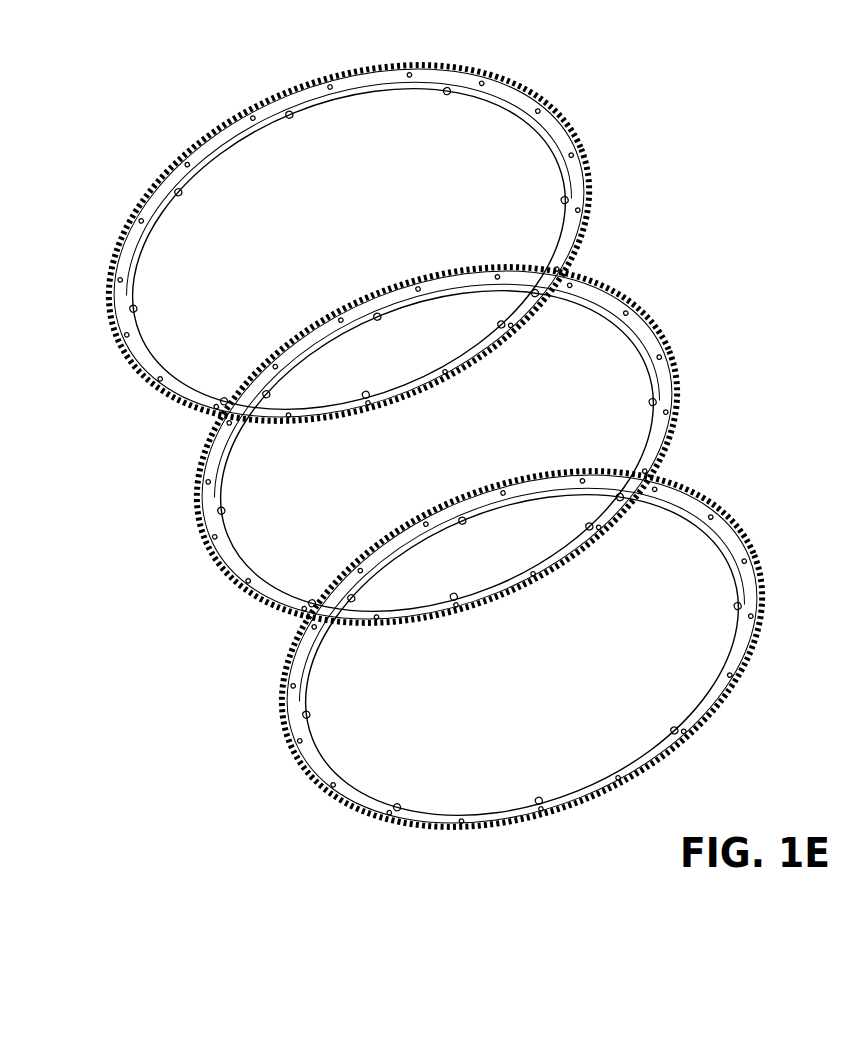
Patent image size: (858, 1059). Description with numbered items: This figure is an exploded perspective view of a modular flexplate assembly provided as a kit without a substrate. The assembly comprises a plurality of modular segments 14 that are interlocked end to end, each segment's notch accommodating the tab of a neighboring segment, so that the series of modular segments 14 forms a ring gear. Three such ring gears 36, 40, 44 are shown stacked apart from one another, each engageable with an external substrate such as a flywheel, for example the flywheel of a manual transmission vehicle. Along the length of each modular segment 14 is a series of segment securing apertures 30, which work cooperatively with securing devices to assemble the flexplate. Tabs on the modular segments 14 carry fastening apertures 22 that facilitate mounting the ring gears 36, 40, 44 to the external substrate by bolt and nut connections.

The modular segment 14 is at (570, 135).
The ring gear 44 is at (597, 183).
The ring gear 40 is at (678, 378).
The segment securing aperture 30 is at (242, 573).
The ring gear 36 is at (739, 612).
The fastening aperture 22 is at (713, 540).